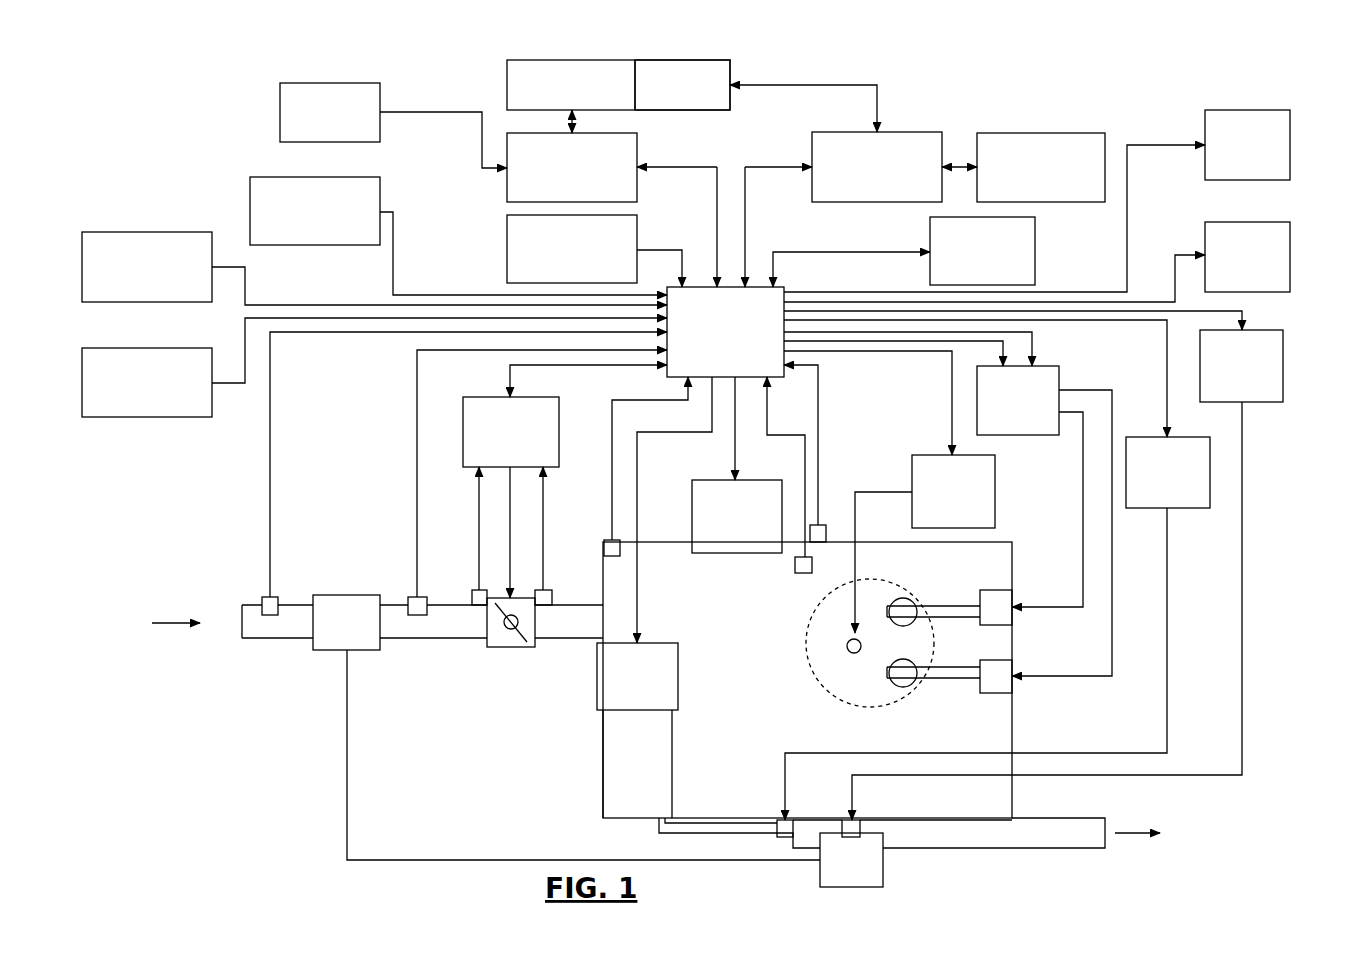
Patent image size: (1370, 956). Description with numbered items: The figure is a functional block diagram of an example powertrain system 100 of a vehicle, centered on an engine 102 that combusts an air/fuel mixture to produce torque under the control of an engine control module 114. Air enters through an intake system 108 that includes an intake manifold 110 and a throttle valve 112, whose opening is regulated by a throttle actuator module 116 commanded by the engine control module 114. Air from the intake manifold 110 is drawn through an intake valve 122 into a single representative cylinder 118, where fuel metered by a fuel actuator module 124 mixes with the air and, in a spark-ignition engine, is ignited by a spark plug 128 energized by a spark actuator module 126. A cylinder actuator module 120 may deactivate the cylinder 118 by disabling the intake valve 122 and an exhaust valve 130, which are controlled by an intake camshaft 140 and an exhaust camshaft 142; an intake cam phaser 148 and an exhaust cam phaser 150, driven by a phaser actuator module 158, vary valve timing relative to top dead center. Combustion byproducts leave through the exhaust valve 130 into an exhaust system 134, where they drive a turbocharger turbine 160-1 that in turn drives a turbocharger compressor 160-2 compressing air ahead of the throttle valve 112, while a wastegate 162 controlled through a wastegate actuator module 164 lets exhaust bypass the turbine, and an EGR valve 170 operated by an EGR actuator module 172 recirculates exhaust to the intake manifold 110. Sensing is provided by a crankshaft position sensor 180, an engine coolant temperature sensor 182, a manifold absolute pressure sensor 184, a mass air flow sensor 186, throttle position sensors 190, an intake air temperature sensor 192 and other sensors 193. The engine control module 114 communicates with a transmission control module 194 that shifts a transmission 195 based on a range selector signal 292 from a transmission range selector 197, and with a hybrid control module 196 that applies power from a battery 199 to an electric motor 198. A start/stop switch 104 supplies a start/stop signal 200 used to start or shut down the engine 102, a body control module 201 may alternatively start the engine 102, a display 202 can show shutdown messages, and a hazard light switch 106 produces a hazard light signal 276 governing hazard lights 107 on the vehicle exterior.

The powertrain system 100 is at (158, 100).
The engine 102 is at (1012, 552).
The start/stop switch 104 is at (507, 250).
The hazard light switch 106 is at (150, 232).
The hazard lights 107 is at (1290, 257).
The intake system 108 is at (240, 672).
The intake manifold 110 is at (603, 758).
The throttle valve 112 is at (507, 648).
The engine control module 114 is at (747, 287).
The throttle actuator module 116 is at (490, 397).
The cylinder 118 is at (830, 704).
The cylinder actuator module 120 is at (745, 480).
The intake valve 122 is at (905, 592).
The fuel actuator module 124 is at (665, 710).
The spark actuator module 126 is at (995, 492).
The spark plug 128 is at (847, 645).
The exhaust valve 130 is at (900, 688).
The exhaust system 134 is at (1078, 848).
The intake camshaft 140 is at (956, 606).
The exhaust camshaft 142 is at (956, 679).
The intake cam phaser 148 is at (1000, 590).
The exhaust cam phaser 150 is at (998, 694).
The phaser actuator module 158 is at (1059, 386).
The turbocharger turbine 160-1 is at (883, 868).
The turbocharger compressor 160-2 is at (332, 650).
The wastegate 162 is at (860, 828).
The wastegate actuator module 164 is at (1250, 402).
The exhaust gas recirculation valve 170 is at (783, 838).
The EGR actuator module 172 is at (1175, 508).
The crankshaft position sensor 180 is at (822, 525).
The engine coolant temperature sensor 182 is at (800, 573).
The manifold absolute pressure sensor 184 is at (605, 541).
The mass air flow sensor 186 is at (412, 597).
The throttle position sensor 190 is at (478, 607).
The intake air temperature sensor 192 is at (265, 597).
The other sensors 193 is at (250, 195).
The transmission control module 194 is at (507, 183).
The transmission 195 is at (507, 86).
The hybrid control module 196 is at (876, 202).
The transmission range selector 197 is at (280, 106).
The electric motor 198 is at (683, 110).
The battery 199 is at (1055, 202).
The start/stop signal 200 is at (225, 386).
The body control module 201 is at (1035, 255).
The display 202 is at (1290, 145).
The hazard light signal 276 is at (362, 299).
The range selector signal 292 is at (437, 112).